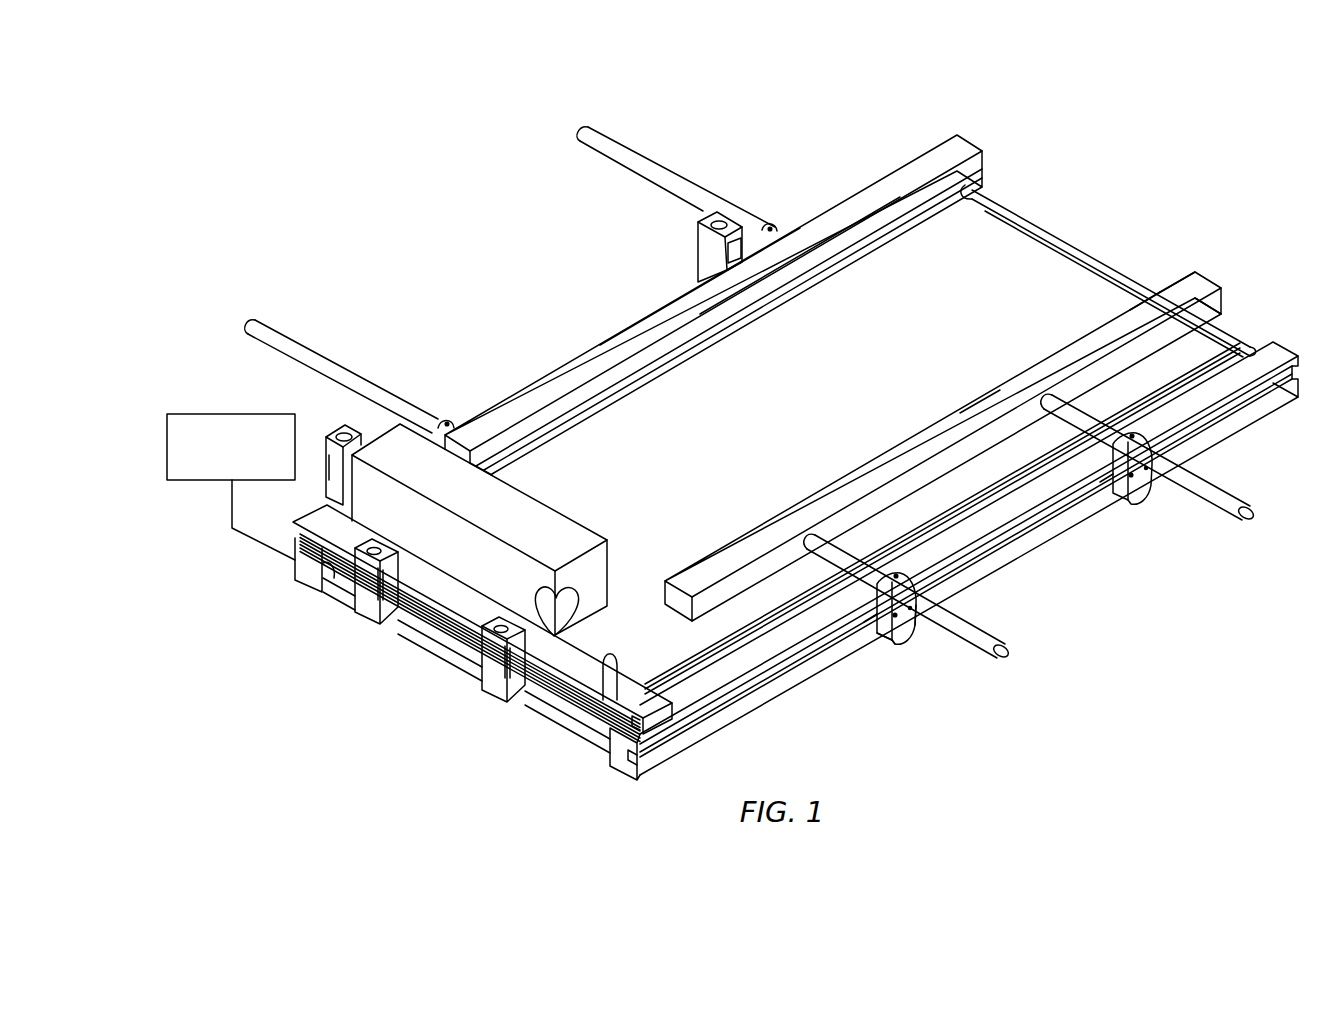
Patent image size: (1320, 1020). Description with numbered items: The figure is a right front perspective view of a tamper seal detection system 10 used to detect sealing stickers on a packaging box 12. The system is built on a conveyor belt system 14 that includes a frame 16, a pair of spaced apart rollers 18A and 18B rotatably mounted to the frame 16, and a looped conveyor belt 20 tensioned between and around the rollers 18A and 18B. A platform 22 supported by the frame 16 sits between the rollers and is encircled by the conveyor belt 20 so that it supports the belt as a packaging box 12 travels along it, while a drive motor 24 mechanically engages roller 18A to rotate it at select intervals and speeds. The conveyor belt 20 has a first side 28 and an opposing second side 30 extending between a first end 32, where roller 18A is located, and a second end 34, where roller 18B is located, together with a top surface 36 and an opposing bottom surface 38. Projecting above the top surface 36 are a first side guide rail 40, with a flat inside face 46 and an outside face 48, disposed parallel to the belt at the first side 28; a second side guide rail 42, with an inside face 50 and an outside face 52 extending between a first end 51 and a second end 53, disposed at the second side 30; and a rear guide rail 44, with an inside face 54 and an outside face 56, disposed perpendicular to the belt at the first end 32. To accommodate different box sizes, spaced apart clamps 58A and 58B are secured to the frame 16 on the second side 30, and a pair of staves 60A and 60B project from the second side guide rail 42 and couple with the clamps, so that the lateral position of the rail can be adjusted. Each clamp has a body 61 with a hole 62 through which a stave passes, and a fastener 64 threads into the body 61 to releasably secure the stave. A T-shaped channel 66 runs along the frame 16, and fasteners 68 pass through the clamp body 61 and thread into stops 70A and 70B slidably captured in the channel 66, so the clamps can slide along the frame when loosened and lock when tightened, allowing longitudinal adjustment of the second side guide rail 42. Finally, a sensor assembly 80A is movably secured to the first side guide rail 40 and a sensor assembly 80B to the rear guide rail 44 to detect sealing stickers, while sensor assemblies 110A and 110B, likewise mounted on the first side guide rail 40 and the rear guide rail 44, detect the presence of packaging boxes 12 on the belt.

The tamper seal detection system 10 is at (476, 233).
The packaging box 12 is at (447, 545).
The conveyor belt system 14 is at (1040, 152).
The frame 16 is at (633, 782).
The roller 18A is at (318, 580).
The roller 18B is at (975, 186).
The conveyor belt 20 is at (573, 465).
The platform 22 is at (977, 507).
The drive motor 24 is at (220, 413).
The first side 28 is at (705, 318).
The second side 30 is at (990, 440).
The first end 32 is at (528, 703).
The second end 34 is at (1120, 245).
The top surface 36 is at (850, 305).
The bottom surface 38 is at (793, 693).
The first side guide rail 40 is at (955, 152).
The second side guide rail 42 is at (1197, 292).
The rear guide rail 44 is at (343, 545).
The inside face 46 is at (895, 212).
The outside face 48 is at (852, 198).
The inside face 50 is at (1137, 305).
The first end 51 is at (745, 494).
The outside face 52 is at (1221, 318).
The second end 53 is at (1098, 290).
The inside face 54 is at (617, 657).
The outside face 56 is at (573, 690).
The clamp 58A is at (910, 640).
The clamp 58B is at (1137, 495).
The stave 60A is at (988, 638).
The stave 60B is at (1240, 500).
The body 61 is at (897, 644).
The hole 62 is at (915, 600).
The fastener 64 is at (882, 641).
The T-shaped channel 66 is at (700, 727).
The fastener 68 is at (918, 617).
The stop 70A is at (870, 632).
The stop 70B is at (1114, 494).
The sensor assembly 80A is at (346, 404).
The sensor assembly 80B is at (468, 701).
The sensor assembly 110A is at (683, 227).
The sensor assembly 110B is at (365, 608).